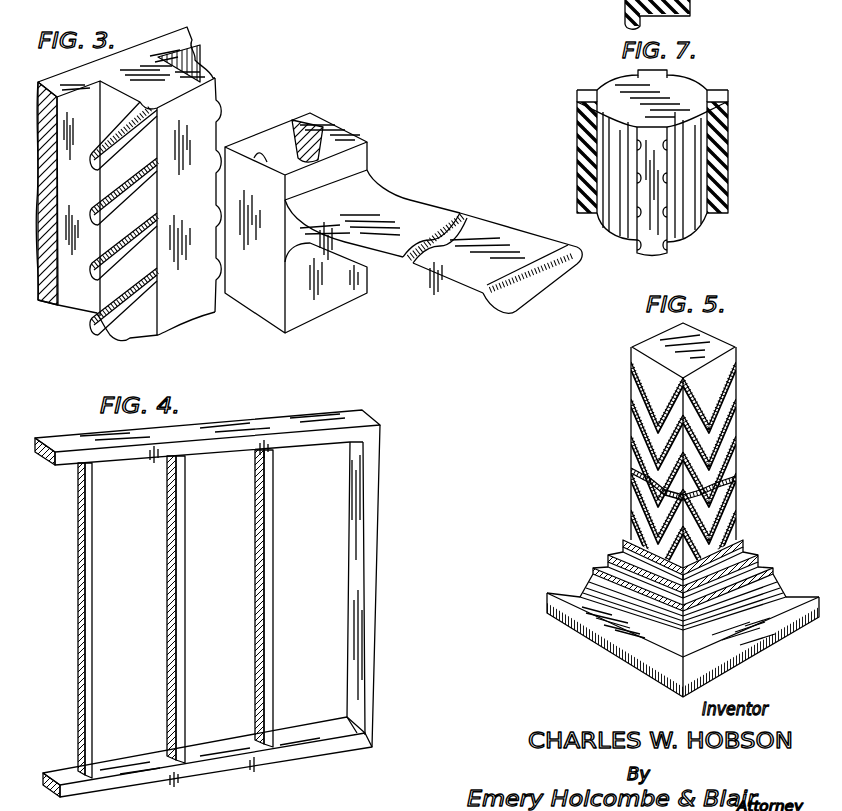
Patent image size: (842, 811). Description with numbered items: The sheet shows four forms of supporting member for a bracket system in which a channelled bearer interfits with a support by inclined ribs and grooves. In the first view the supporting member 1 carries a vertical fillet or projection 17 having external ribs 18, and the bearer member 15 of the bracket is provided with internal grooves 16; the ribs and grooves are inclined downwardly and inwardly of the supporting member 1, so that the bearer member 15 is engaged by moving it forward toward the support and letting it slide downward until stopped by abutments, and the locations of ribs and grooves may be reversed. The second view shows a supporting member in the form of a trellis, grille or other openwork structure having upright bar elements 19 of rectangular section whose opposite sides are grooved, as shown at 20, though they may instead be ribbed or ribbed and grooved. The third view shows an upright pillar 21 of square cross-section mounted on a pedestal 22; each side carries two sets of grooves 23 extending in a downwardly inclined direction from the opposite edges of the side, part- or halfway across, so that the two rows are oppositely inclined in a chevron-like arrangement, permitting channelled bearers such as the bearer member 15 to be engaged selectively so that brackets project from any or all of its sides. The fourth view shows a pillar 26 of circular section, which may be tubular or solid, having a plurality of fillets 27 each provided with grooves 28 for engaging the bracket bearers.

In FIG. 3, the supporting member 1 is at (144, 173).
In FIG. 3, the bearer member 15 is at (403, 224).
In FIG. 3, the internal grooves 16 is at (293, 122).
In FIG. 3, the vertical fillet or projection 17 is at (147, 78).
In FIG. 3, the external ribs 18 is at (117, 190).
In FIG. 4, the upright bar elements 19 is at (168, 614).
In FIG. 4, the grooves 20 is at (78, 573).
In FIG. 5, the upright pillar 21 is at (681, 506).
In FIG. 5, the pedestal 22 is at (588, 612).
In FIG. 5, the grooves 23 is at (737, 370).
In FIG. 7, the pillar 26 is at (643, 93).
In FIG. 7, the fillets 27 is at (652, 123).
In FIG. 7, the grooves 28 is at (576, 155).